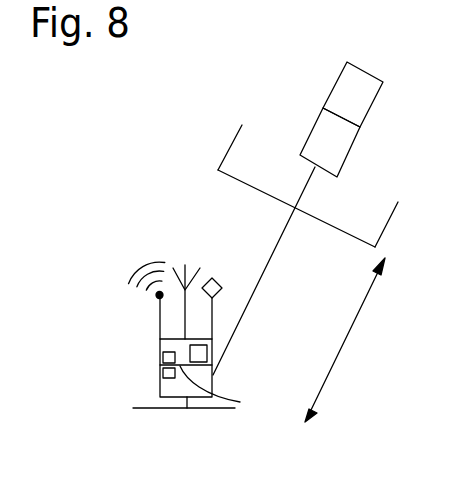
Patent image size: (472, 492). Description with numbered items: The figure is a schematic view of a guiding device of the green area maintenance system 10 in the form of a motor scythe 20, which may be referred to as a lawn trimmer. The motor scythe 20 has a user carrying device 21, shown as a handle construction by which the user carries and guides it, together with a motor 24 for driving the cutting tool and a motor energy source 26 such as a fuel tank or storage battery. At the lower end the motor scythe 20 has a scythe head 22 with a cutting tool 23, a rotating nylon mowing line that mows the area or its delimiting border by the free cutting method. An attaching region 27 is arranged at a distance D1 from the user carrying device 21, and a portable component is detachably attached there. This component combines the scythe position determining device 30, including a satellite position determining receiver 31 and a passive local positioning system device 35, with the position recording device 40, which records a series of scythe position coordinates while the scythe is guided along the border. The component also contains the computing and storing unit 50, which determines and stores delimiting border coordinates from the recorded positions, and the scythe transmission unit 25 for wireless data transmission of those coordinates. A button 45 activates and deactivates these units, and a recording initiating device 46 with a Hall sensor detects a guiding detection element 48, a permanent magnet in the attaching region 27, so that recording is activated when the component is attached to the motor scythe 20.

The green area maintenance system 10 is at (148, 178).
The motor scythe 20 is at (268, 265).
The user carrying device 21 is at (231, 151).
The scythe head 22 is at (163, 370).
The cutting tool 23 is at (147, 410).
The motor 24 is at (343, 153).
The scythe transmission unit 25 is at (185, 321).
The motor energy source 26 is at (366, 107).
The attaching region 27 is at (227, 391).
The scythe position determining device 30 is at (160, 340).
The satellite position determining receiver 31 is at (160, 322).
The local positioning system device 35 is at (212, 278).
The position recording device 40 is at (163, 357).
The button 45 is at (202, 357).
The recording and/or control initiating device 46 is at (163, 360).
The guiding detection element 48 is at (163, 375).
The computing and storing unit 50 is at (207, 352).
The distance D1 is at (345, 340).